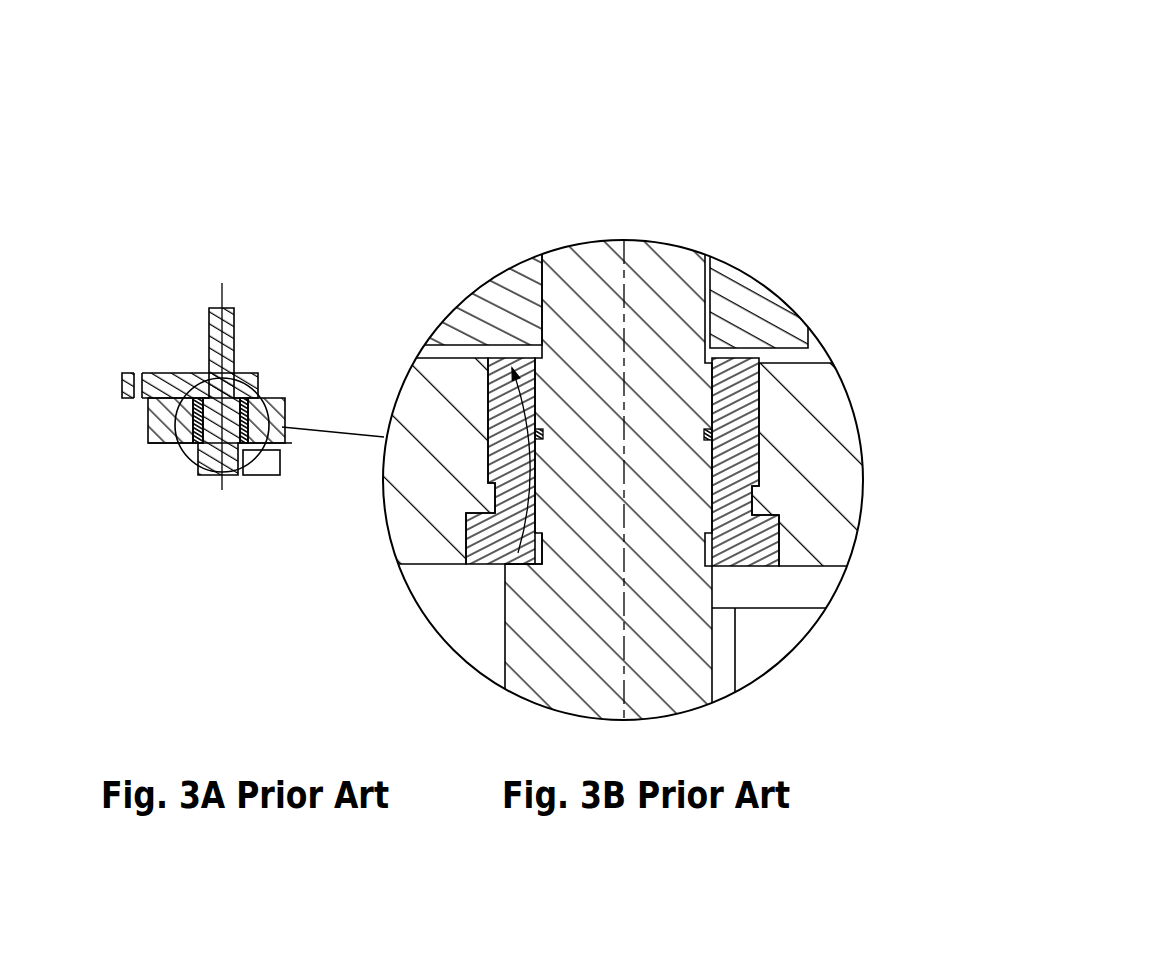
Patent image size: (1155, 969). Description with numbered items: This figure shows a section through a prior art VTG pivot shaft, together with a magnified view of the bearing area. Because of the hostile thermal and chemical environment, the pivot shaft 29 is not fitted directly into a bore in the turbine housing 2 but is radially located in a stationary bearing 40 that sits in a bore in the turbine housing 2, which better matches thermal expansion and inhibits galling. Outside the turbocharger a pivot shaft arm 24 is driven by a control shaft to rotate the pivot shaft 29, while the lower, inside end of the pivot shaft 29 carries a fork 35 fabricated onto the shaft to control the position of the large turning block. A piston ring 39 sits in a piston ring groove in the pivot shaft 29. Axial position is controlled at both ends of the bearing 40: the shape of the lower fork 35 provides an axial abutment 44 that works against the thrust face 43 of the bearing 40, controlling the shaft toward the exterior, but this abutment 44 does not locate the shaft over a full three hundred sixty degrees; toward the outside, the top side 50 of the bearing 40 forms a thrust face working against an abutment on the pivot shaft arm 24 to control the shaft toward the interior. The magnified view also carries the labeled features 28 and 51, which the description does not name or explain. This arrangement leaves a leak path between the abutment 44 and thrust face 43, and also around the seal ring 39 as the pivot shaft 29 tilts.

In FIG. 3B, the turbine housing 2 is at (828, 512).
In FIG. 3A, the pivot shaft arm 24 is at (163, 372).
In FIG. 3B, the pivot shaft arm 24 is at (744, 308).
In FIG. 3B, the bolt axis 28 is at (622, 270).
In FIG. 3B, the pivot shaft 29 is at (667, 290).
In FIG. 3A, the fork 35 is at (262, 473).
In FIG. 3B, the piston ring 39 is at (713, 433).
In FIG. 3B, the bearing 40 is at (737, 477).
In FIG. 3B, the thrust face 43 is at (514, 546).
In FIG. 3B, the axial abutment 44 is at (514, 579).
In FIG. 3B, the top side 50 is at (541, 441).
In FIG. 3B, the flange collar 51 is at (500, 323).